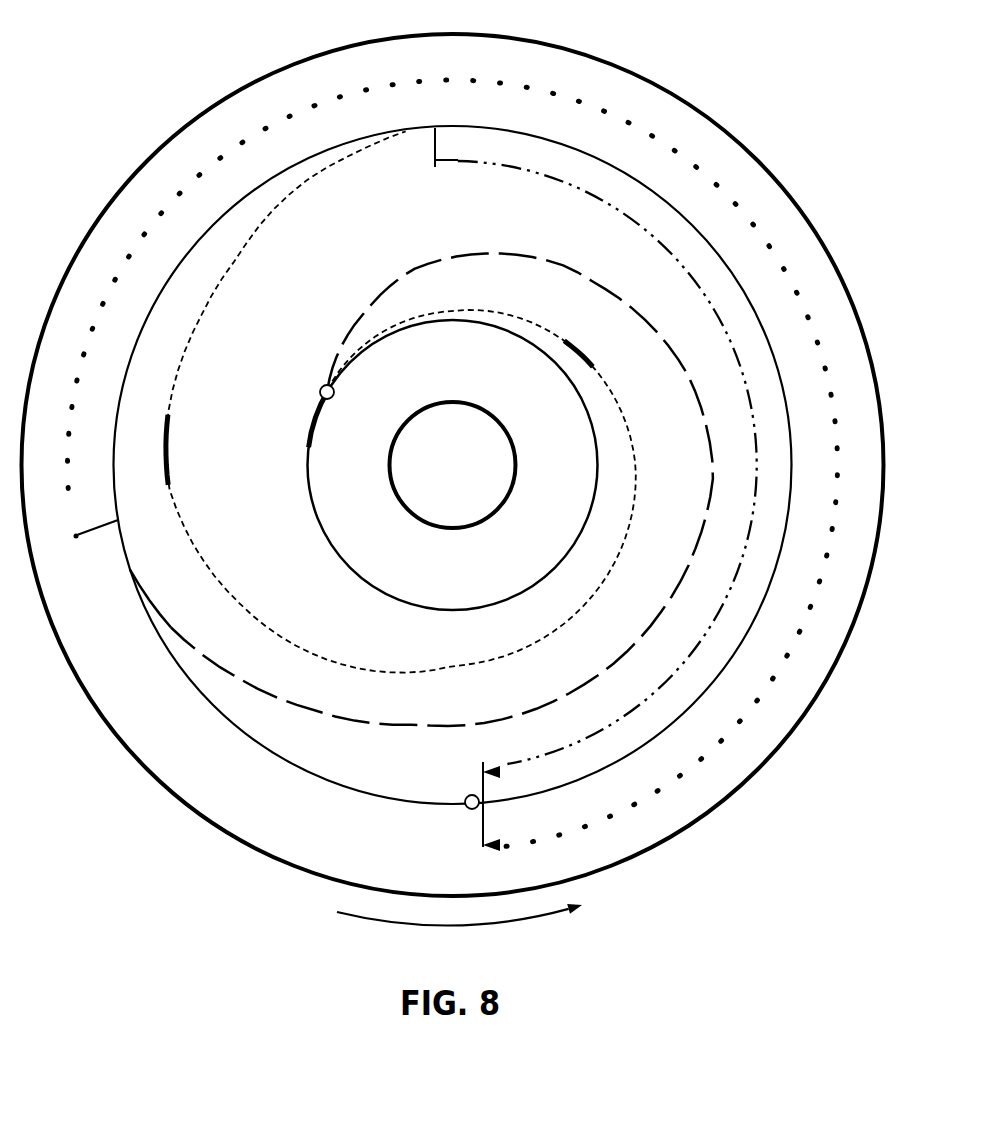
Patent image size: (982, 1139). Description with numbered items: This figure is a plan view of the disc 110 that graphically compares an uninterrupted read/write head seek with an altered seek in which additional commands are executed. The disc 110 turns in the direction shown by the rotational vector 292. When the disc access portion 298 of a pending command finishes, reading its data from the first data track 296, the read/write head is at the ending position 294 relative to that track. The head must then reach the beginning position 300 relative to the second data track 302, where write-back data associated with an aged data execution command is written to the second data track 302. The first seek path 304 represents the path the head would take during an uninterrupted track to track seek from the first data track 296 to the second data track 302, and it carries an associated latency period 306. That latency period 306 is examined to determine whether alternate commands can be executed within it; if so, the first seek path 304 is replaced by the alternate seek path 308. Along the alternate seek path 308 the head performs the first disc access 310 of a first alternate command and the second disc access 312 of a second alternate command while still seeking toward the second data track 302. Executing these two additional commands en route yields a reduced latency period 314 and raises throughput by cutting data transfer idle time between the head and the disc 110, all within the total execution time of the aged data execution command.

The disc 110 is at (199, 63).
The rotational vector 292 is at (513, 925).
The ending position 294 is at (320, 393).
The first data track 296 is at (311, 500).
The disc access portion 298 is at (312, 418).
The beginning position 300 is at (477, 808).
The second data track 302 is at (348, 787).
The first seek path 304 is at (134, 575).
The latency period 306 is at (72, 508).
The alternate seek path 308 is at (407, 131).
The first disc access 310 is at (593, 364).
The second disc access 312 is at (167, 463).
The latency period 314 is at (455, 162).